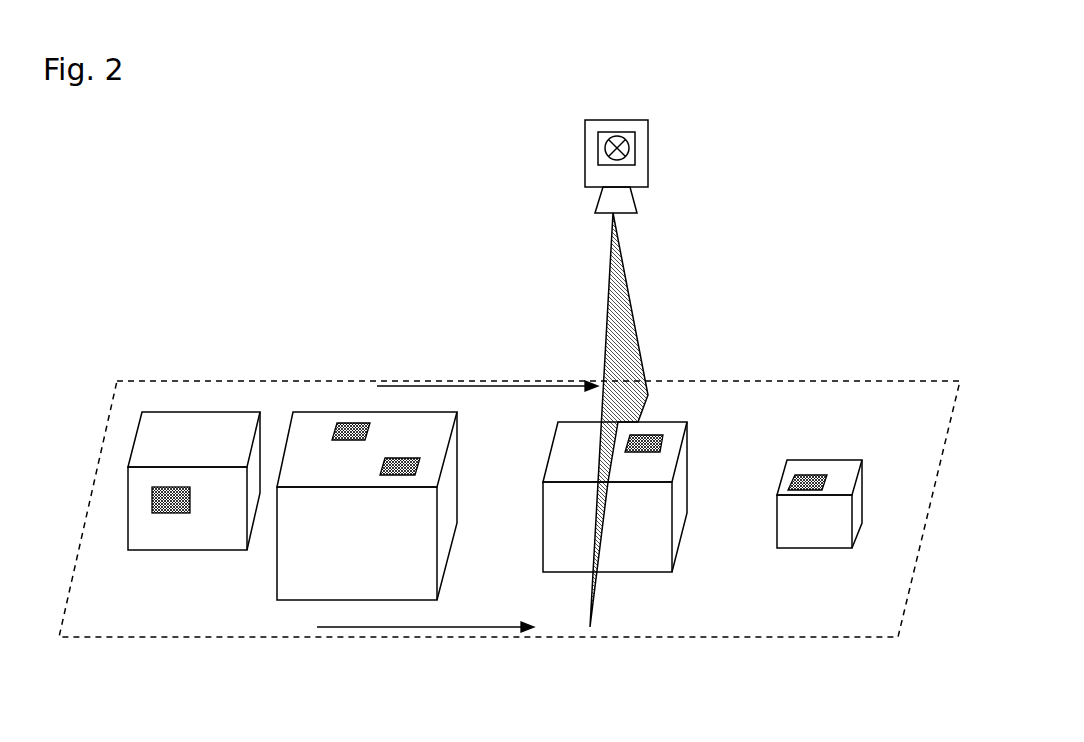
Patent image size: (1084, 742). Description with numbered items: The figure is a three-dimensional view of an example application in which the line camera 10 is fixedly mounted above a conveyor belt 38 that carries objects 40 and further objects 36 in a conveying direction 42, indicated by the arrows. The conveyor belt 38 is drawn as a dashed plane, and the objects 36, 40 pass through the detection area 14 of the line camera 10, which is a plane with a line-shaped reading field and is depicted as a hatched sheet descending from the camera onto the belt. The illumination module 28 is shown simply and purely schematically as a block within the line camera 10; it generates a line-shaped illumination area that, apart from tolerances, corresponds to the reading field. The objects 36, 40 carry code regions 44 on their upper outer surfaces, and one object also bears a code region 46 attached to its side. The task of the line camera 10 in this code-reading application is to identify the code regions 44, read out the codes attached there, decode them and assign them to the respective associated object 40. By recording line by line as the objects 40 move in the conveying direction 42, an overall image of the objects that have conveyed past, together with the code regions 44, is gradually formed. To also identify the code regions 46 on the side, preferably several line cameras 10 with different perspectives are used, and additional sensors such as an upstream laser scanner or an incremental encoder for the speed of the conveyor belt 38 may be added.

The line camera 10 is at (647, 157).
The illumination module 28 is at (597, 147).
The detection area 14 is at (620, 357).
The objects 36 is at (153, 425).
The object 40 is at (318, 547).
The code region 44 is at (393, 460).
The code region attached to the side 46 is at (163, 503).
The conveying direction 42 is at (407, 627).
The conveyor belt 38 is at (862, 638).